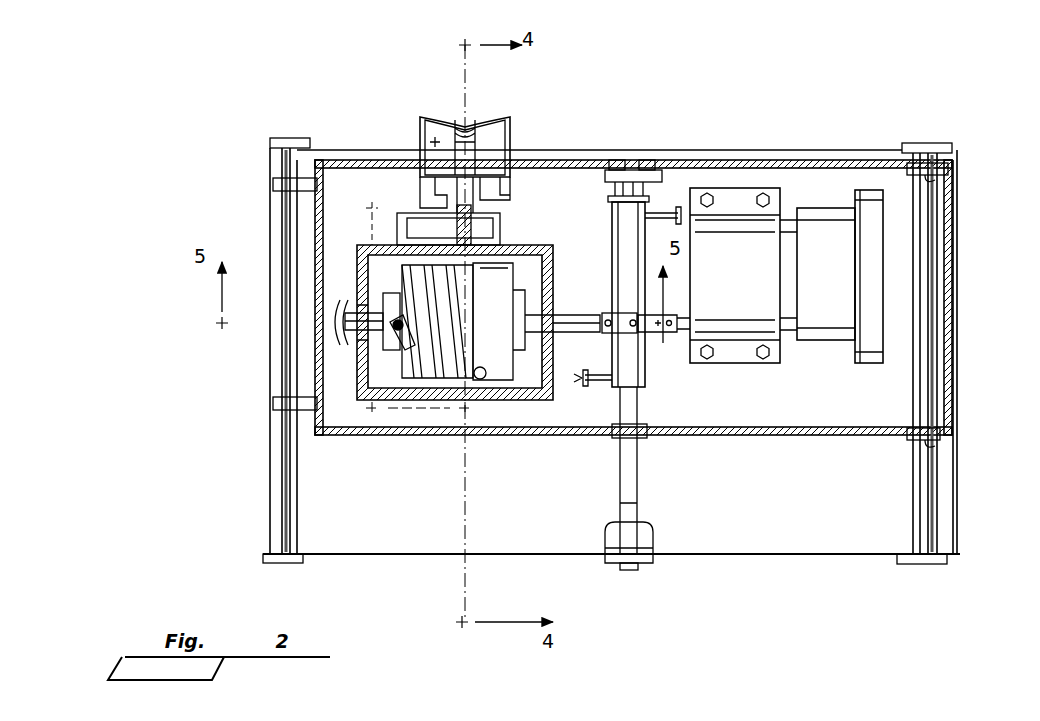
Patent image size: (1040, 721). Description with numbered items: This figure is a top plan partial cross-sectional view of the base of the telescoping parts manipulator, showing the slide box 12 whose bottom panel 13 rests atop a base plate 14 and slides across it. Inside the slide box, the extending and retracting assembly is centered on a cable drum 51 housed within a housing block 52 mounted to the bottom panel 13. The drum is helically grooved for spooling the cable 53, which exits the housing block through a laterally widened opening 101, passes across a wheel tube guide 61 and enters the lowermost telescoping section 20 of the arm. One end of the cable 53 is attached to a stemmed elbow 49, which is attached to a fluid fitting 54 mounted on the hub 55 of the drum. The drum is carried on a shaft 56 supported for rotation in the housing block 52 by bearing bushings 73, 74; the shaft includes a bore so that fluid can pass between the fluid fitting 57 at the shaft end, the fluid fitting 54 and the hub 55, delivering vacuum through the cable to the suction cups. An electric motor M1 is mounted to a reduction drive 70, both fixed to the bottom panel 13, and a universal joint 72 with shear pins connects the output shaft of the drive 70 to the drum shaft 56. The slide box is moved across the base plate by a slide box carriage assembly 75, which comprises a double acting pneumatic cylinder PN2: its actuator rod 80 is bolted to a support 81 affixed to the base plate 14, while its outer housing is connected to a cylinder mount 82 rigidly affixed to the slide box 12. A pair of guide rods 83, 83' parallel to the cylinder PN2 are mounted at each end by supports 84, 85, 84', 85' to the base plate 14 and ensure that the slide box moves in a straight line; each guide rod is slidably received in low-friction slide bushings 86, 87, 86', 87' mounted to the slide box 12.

The slide box 12 is at (797, 436).
The bottom panel 13 is at (812, 403).
The base plate 14 is at (795, 556).
The lowermost telescoping section 20 is at (422, 125).
The stemmed elbow 49 is at (395, 326).
The cable drum 51 is at (513, 273).
The housing block 52 is at (540, 247).
The cable 53 is at (457, 363).
The fluid fitting 54 is at (403, 327).
The hub 55 is at (383, 340).
The shaft 56 is at (572, 337).
The fluid fitting 57 is at (350, 322).
The wheel tube guide 61 is at (495, 193).
The reduction drive 70 is at (742, 281).
The universal joint 72 is at (660, 333).
The bearing bushing 73 is at (565, 312).
The bearing bushing 74 is at (353, 312).
The slide box carriage assembly 75 is at (662, 446).
The actuator rod 80 is at (620, 482).
The support 81 is at (650, 565).
The cylinder mount 82 is at (665, 170).
The guide rod 83 is at (901, 353).
The guide rod 83' is at (306, 351).
The support 84 is at (939, 125).
The support 84' is at (291, 106).
The support 85 is at (922, 582).
The support 85' is at (309, 571).
The slide bushing 86 is at (959, 177).
The slide bushing 86' is at (267, 175).
The slide bushing 87 is at (957, 448).
The slide bushing 87' is at (266, 421).
The opening 101 is at (487, 230).
The electric motor M1 is at (845, 281).
The pneumatic cylinder PN2 is at (640, 375).